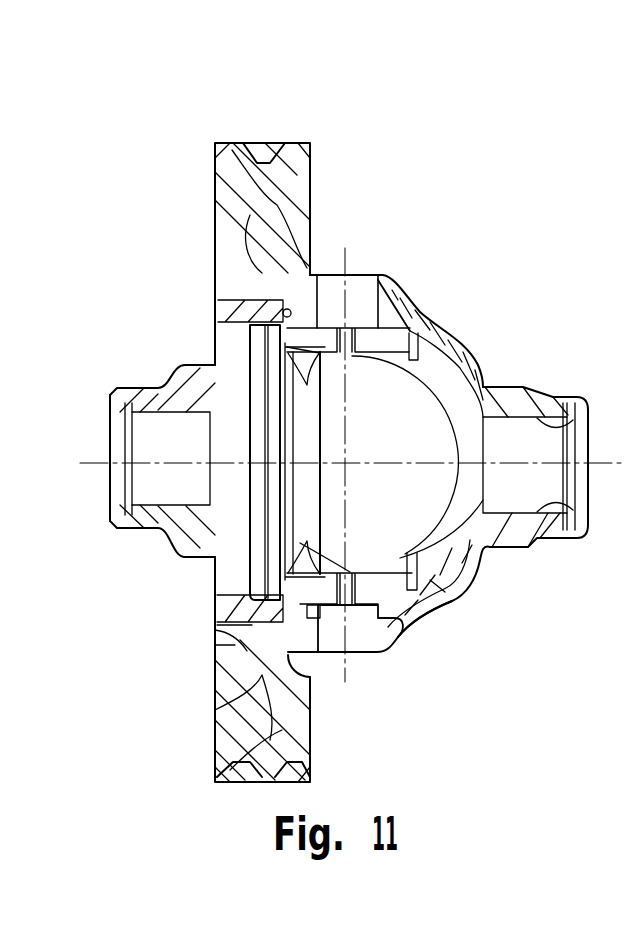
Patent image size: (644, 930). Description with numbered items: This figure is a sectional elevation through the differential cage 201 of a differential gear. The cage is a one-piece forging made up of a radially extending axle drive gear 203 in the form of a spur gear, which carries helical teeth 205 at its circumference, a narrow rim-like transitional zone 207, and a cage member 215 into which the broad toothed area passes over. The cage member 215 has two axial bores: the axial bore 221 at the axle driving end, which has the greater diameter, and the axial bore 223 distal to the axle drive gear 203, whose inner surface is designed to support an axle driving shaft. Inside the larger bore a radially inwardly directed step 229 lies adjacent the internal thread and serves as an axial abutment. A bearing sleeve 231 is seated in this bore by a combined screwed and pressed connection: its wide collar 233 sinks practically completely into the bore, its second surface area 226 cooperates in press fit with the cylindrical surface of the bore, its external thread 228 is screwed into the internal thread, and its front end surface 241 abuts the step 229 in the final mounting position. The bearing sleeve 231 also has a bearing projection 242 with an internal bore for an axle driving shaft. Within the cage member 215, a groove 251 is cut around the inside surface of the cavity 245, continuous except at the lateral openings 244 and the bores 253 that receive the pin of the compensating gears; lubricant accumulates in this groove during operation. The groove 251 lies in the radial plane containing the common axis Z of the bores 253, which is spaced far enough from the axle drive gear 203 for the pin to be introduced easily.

The differential cage 201 is at (478, 250).
The axle drive gear 203 is at (215, 221).
The helical teeth 205 is at (253, 152).
The transitional zone 207 is at (267, 223).
The cage member 215 is at (356, 330).
The axial bore 221 is at (215, 313).
The axial bore 223 is at (590, 408).
The second surface area 226 is at (217, 645).
The external thread 228 is at (230, 675).
The step 229 is at (288, 297).
The bearing sleeve 231 is at (167, 535).
The collar 233 is at (227, 608).
The front end surface 241 is at (215, 335).
The bearing projection 242 is at (157, 400).
The lateral openings 244 is at (455, 595).
The cavity 245 is at (422, 510).
The groove 251 is at (355, 337).
The bores 253 is at (395, 305).
The common axis Z is at (427, 545).